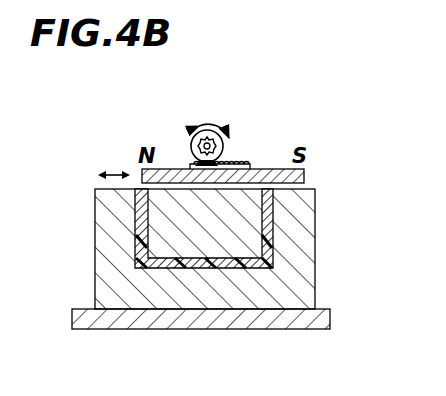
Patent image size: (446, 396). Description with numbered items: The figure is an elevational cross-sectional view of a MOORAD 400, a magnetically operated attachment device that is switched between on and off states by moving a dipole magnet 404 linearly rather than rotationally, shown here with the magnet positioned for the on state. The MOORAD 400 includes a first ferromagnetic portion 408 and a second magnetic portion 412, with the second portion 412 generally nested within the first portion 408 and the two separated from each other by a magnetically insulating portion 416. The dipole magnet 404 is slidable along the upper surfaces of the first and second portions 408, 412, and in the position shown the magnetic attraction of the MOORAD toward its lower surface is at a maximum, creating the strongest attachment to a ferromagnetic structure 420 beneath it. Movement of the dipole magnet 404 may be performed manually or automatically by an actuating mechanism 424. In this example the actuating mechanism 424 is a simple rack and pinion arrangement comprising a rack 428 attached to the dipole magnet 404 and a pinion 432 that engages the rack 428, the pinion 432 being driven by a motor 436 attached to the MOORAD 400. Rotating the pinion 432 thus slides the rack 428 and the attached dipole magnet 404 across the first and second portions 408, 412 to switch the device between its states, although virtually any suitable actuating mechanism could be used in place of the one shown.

The MOORAD 400 is at (338, 174).
The dipole magnet 404 is at (278, 168).
The first ferromagnetic portion 408 is at (118, 214).
The second magnetic portion 412 is at (162, 243).
The magnetically insulating portion 416 is at (268, 258).
The ferromagnetic structure 420 is at (190, 324).
The actuating mechanism 424 is at (213, 114).
The rack 428 is at (236, 163).
The pinion 432 is at (191, 141).
The motor 436 is at (195, 130).